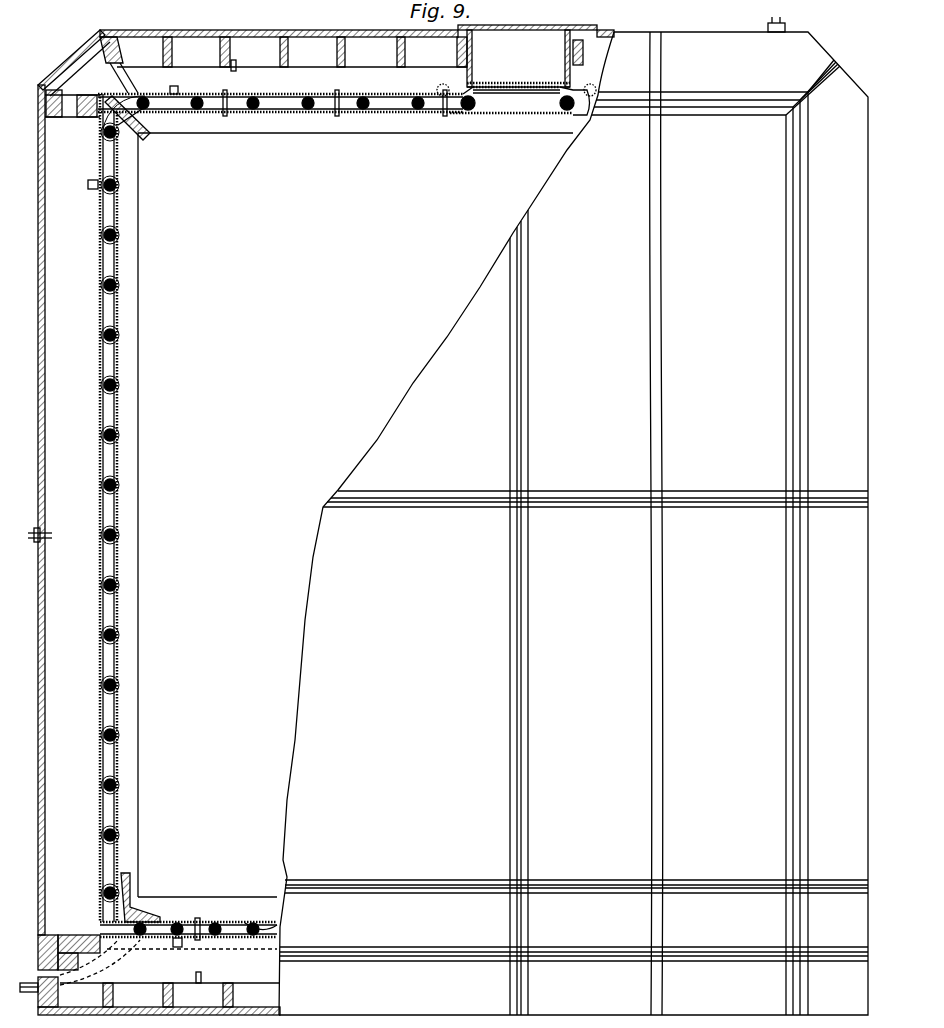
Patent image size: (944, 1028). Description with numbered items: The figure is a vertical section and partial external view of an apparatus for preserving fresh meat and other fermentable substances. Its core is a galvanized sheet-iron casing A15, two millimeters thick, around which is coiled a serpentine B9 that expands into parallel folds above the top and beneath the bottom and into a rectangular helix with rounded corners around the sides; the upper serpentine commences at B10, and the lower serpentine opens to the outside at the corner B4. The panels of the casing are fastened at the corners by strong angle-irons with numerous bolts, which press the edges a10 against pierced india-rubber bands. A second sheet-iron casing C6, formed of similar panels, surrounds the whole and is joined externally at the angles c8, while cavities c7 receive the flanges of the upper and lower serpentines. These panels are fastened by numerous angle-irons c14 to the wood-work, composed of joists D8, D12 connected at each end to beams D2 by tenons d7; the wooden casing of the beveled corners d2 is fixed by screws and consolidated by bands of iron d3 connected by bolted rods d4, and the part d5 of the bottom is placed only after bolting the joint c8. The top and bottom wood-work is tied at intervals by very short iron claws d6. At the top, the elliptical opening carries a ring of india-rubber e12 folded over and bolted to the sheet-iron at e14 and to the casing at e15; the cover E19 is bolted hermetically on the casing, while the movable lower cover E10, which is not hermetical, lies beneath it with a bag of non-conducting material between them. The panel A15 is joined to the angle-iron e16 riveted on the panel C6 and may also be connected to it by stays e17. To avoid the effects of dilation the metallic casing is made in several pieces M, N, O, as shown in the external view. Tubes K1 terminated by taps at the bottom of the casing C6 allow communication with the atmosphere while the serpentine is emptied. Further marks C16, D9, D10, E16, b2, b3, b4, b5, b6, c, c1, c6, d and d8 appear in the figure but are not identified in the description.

The galvanized sheet-iron casing A15 is at (347, 515).
The serpentine B9 is at (188, 929).
The commencement of the upper serpentine B10 is at (786, 22).
The corner B4 is at (21, 999).
The top channel bar C16 is at (280, 94).
The second sheet-iron casing C6 is at (192, 942).
The joist D8 is at (78, 241).
The side channel flange D9 is at (109, 364).
The corner post D10 is at (111, 65).
The joist D12 is at (263, 522).
The beam D2 is at (68, 998).
The movable cover E10 is at (547, 60).
The end channel E16 is at (516, 99).
The cover E19 is at (527, 47).
The tube K1 is at (26, 979).
The piece of the metallic casing M is at (574, 612).
The piece of the metallic casing N is at (618, 523).
The piece of the metallic casing O is at (716, 537).
The edges a10 is at (130, 509).
The bolt b2 is at (104, 661).
The bolt b3 is at (44, 535).
The bolt b4 is at (108, 224).
The bolt b5 is at (92, 386).
The bolt b6 is at (124, 113).
The clip c is at (98, 88).
The clip c1 is at (91, 932).
The clip c6 is at (89, 458).
The cavities c7 is at (86, 186).
The angles c8 is at (171, 517).
The angle-irons c14 is at (205, 934).
The lug d is at (214, 989).
The beveled corners d2 is at (116, 52).
The bands of iron d3 is at (95, 82).
The bolted rods d4 is at (72, 93).
The part of the bottom d5 is at (74, 943).
The claws of iron d6 is at (65, 942).
The tenons d7 is at (100, 962).
The pin d8 is at (220, 518).
The ring of india-rubber e12 is at (473, 66).
The bolting point on the sheet-iron e14 is at (489, 86).
The bolting point on the casing e15 is at (486, 41).
The angle-iron e16 is at (488, 104).
The stays e17 is at (335, 103).